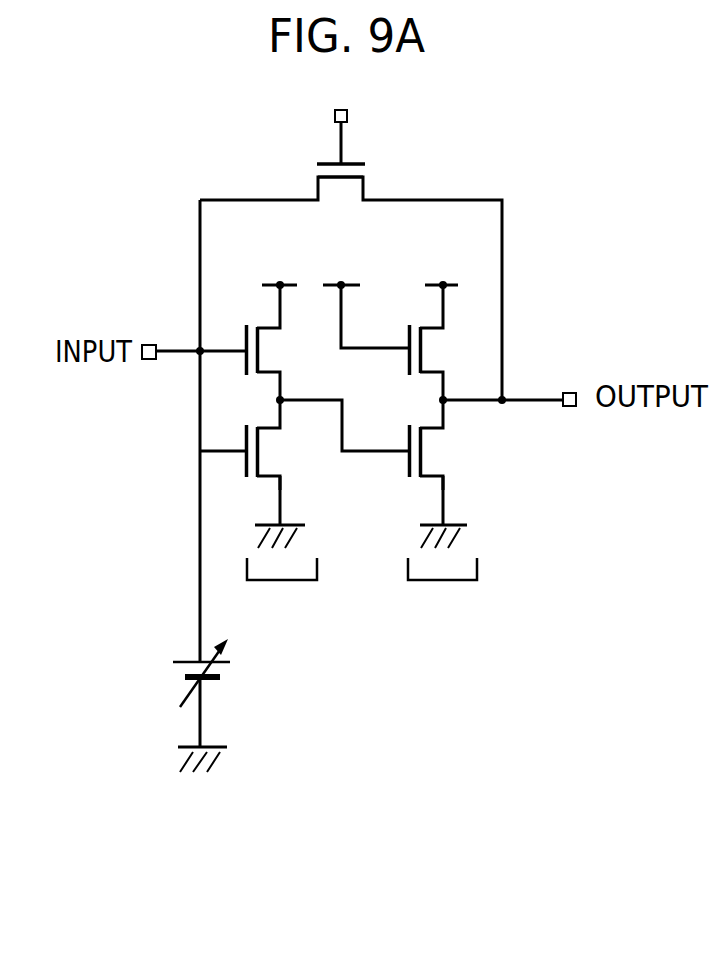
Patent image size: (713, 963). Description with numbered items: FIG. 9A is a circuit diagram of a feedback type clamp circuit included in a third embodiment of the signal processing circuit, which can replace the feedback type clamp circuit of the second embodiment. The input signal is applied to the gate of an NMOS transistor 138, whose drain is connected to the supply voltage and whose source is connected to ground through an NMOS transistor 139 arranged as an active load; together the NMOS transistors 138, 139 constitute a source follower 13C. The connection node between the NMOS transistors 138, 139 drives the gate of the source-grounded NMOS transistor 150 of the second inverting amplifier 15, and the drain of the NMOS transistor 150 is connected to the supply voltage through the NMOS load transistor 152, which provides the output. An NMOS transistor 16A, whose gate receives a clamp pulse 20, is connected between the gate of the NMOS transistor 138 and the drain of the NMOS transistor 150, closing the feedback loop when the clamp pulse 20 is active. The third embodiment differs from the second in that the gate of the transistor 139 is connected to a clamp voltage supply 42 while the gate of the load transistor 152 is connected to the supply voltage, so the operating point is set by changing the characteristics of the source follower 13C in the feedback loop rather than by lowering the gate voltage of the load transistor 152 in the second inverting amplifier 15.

The clamp pulse 20 is at (347, 115).
The NMOS transistor 16A is at (330, 189).
The NMOS transistor 138 is at (275, 352).
The NMOS transistor 139 is at (275, 453).
The NMOS load transistor 152 is at (430, 353).
The source-grounded NMOS transistor 150 is at (438, 453).
The source follower 13C is at (278, 582).
The second inverting amplifier 15 is at (443, 583).
The clamp voltage supply 42 is at (223, 670).